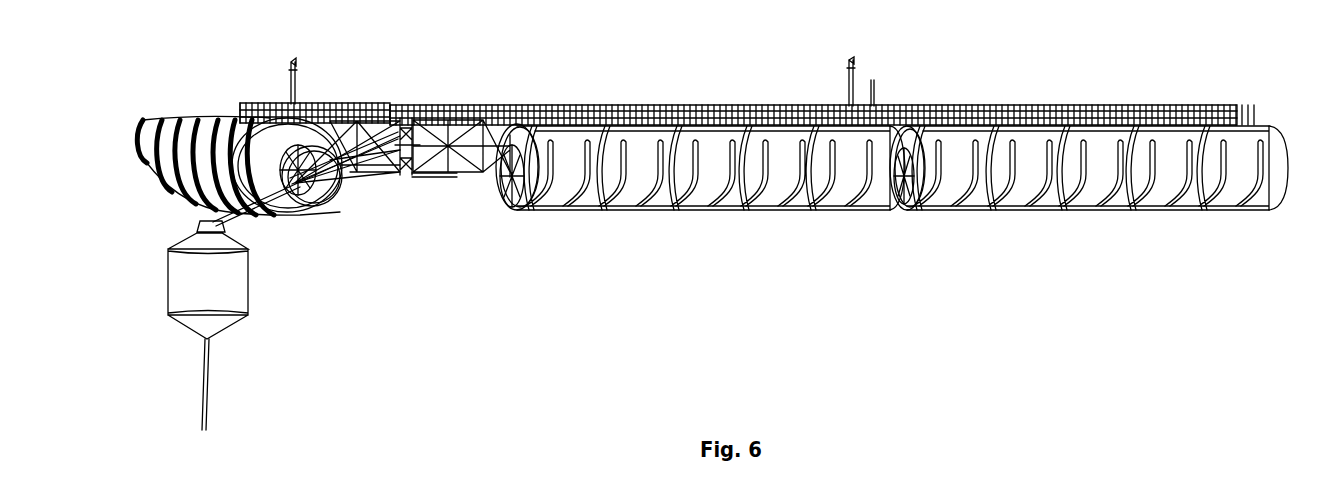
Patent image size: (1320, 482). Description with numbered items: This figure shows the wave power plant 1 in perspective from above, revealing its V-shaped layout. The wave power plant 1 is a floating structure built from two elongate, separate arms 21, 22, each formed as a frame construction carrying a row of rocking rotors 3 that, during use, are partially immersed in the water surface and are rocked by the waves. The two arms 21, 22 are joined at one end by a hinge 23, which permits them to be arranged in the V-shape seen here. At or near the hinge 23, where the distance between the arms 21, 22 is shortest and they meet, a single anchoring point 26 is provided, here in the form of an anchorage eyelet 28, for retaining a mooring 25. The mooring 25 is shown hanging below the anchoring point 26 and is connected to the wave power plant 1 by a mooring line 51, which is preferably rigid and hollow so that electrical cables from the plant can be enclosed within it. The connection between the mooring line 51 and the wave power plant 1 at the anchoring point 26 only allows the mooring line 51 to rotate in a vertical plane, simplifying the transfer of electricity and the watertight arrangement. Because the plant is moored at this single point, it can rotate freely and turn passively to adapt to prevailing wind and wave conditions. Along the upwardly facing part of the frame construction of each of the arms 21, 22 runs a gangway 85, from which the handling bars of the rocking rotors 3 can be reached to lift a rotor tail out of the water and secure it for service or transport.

The wave power plant 1 is at (420, 222).
The rocking rotor 3 is at (150, 138).
The arm 21 is at (257, 78).
The arm 22 is at (975, 96).
The hinge 23 is at (400, 105).
The mooring 25 is at (262, 303).
The anchoring point 26 is at (400, 175).
The anchorage eyelet 28 is at (422, 176).
The mooring line 51 is at (238, 221).
The gangway 85 is at (269, 104).